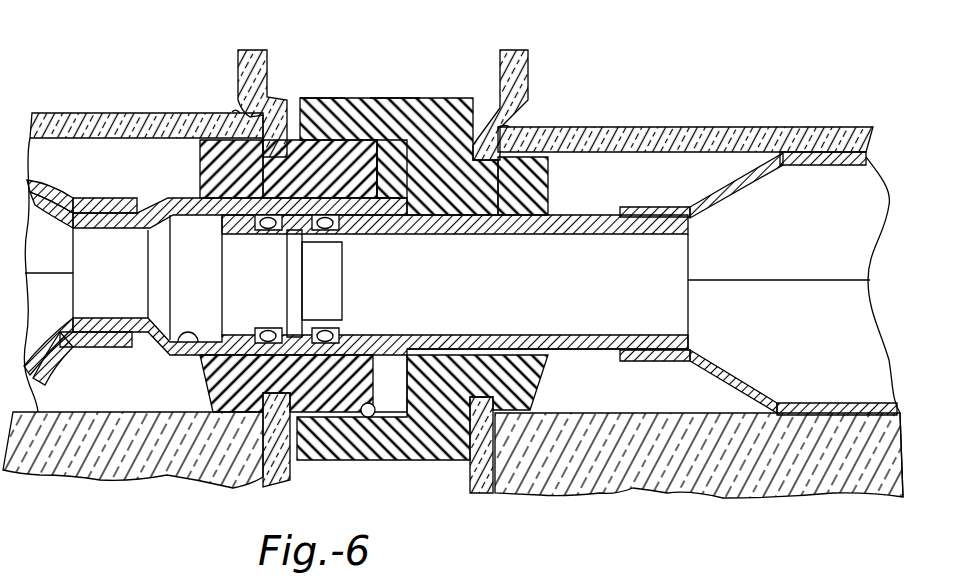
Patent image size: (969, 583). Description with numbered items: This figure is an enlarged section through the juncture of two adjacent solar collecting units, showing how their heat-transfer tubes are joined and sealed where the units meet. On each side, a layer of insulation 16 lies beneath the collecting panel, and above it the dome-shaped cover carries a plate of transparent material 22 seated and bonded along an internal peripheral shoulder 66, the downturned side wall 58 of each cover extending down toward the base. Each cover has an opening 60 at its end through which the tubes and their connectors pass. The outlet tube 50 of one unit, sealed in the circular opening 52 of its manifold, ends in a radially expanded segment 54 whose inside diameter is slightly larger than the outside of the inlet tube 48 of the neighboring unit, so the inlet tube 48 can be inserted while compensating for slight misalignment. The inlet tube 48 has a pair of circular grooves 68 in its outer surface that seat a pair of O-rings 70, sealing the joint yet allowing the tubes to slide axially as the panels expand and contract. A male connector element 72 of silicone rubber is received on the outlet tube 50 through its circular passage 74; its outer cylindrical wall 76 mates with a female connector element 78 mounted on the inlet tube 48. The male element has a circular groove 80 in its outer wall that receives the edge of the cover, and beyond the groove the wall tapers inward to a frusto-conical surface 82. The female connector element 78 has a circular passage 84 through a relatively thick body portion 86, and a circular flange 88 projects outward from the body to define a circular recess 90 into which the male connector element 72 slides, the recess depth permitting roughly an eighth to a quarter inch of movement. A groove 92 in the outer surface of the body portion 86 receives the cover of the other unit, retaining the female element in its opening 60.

The layer of insulation 16 is at (136, 486).
The plate of transparent material 22 is at (118, 108).
The inlet tube 48 is at (602, 352).
The outlet tube 50 is at (119, 326).
The circular opening 52 is at (67, 358).
The radially expanded segment 54 is at (176, 352).
The downturned side wall 58 is at (238, 72).
The opening 60 is at (225, 178).
The internal peripheral shoulder 66 is at (240, 115).
The circular grooves 68 is at (255, 221).
The O-rings 70 is at (272, 236).
The male connector element 72 is at (200, 185).
The circular passage 74 is at (380, 198).
The outer cylindrical wall 76 is at (316, 142).
The female connector element 78 is at (453, 98).
The circular groove 80 is at (288, 442).
The frusto-conical surface 82 is at (388, 353).
The circular passage 84 is at (535, 214).
The body portion 86 is at (493, 222).
The circular flange 88 is at (392, 98).
The circular recess 90 is at (363, 412).
The groove 92 is at (470, 462).